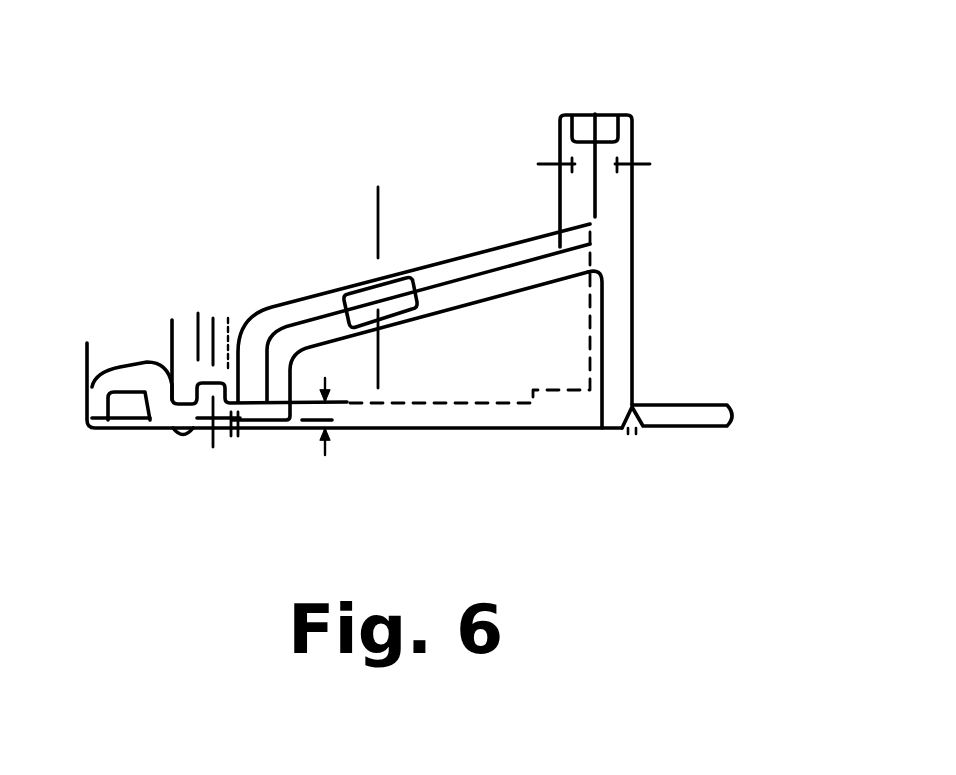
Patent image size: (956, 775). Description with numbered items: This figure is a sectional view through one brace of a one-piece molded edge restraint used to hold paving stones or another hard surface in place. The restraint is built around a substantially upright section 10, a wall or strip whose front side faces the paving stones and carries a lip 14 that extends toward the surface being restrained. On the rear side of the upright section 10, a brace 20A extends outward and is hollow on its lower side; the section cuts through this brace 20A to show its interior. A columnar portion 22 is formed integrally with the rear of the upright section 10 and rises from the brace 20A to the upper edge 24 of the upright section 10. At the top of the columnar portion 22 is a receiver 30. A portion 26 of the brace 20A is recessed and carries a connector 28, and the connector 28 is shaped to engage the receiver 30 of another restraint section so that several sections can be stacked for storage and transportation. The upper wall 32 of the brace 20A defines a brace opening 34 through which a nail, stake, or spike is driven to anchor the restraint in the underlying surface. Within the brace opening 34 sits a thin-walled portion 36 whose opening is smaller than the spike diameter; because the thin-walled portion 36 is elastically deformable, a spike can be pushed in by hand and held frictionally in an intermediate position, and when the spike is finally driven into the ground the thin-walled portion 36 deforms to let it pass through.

The upright section 10 is at (618, 273).
The lip 14 is at (680, 415).
The brace 20A is at (450, 300).
The columnar portion 22 is at (620, 180).
The upper edge 24 is at (629, 98).
The recessed portion 26 is at (184, 376).
The connector 28 is at (222, 433).
The receiver 30 is at (585, 127).
The upper wall 32 is at (508, 283).
The brace opening 34 is at (397, 297).
The thin-walled portion 36 is at (343, 305).